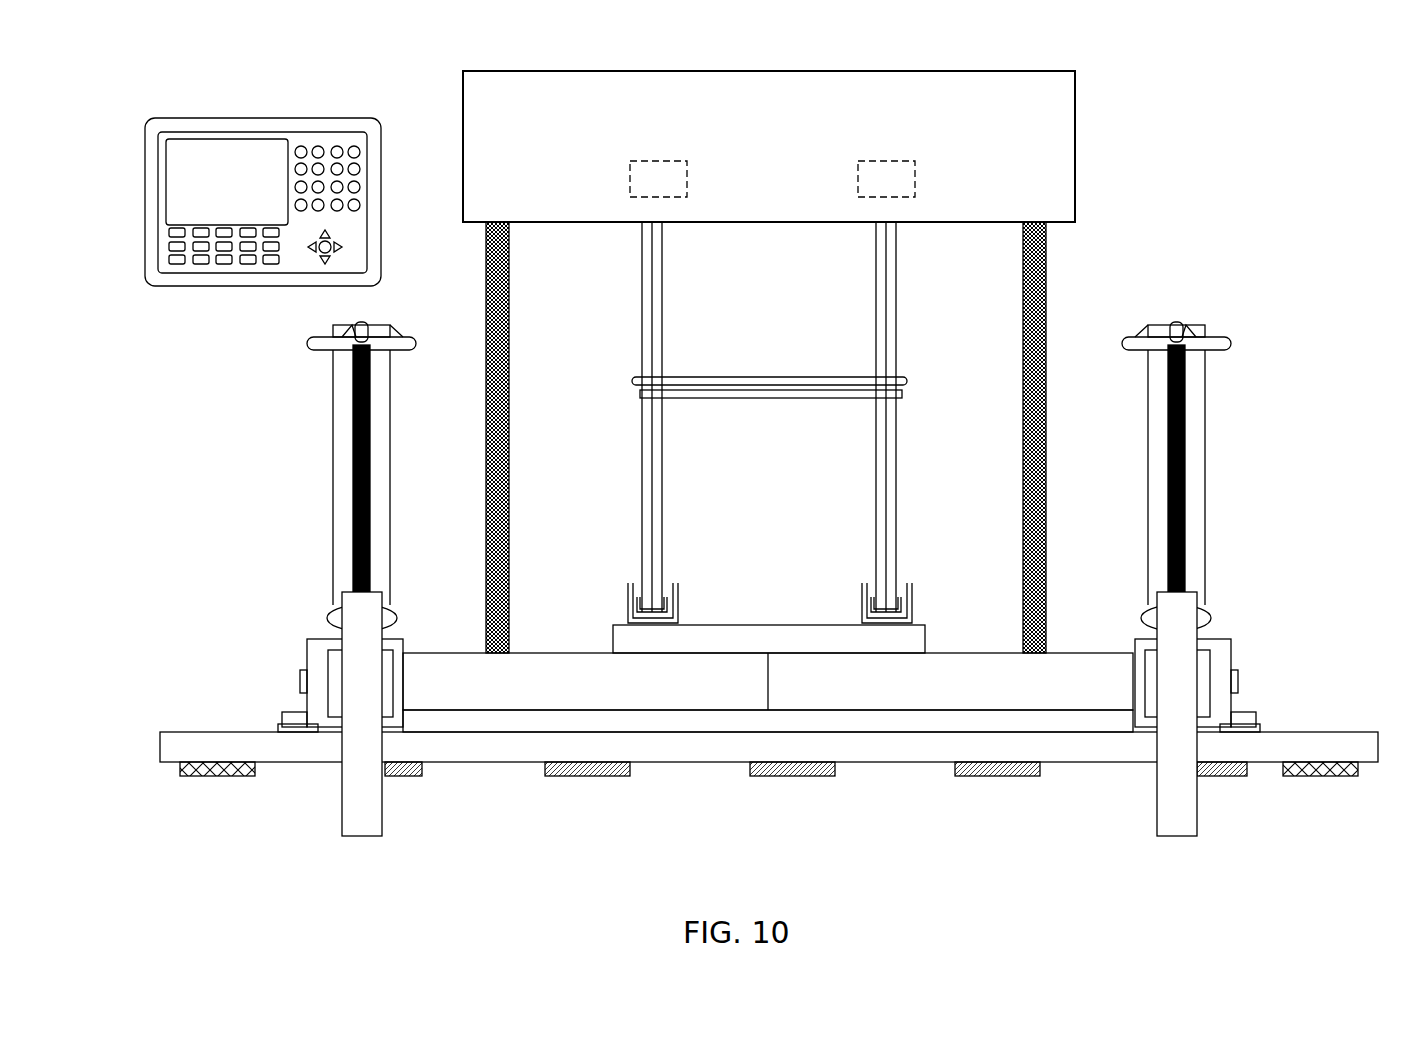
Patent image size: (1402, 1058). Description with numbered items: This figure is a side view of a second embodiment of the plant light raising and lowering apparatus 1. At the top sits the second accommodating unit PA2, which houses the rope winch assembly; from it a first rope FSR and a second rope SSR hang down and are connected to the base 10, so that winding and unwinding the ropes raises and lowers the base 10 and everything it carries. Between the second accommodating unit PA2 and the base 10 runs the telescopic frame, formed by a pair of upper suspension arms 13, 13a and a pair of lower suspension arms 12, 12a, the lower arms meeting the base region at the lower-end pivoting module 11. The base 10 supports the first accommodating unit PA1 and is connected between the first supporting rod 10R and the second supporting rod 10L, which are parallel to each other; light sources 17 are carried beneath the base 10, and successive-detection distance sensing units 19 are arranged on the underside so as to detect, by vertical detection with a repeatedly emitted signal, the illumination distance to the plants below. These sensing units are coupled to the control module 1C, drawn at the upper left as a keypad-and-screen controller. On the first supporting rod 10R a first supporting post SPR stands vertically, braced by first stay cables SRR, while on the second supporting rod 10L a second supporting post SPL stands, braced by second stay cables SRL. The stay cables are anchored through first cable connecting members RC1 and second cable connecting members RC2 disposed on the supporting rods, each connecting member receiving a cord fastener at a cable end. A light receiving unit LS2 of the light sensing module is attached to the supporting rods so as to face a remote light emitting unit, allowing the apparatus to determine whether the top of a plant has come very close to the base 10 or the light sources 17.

The plant light raising and lowering apparatus 1 is at (1280, 122).
The control module 1C is at (198, 297).
The second accommodating unit PA2 is at (1072, 90).
The first accommodating unit PA1 is at (674, 590).
The second rope SSR is at (486, 318).
The first rope FSR is at (1046, 280).
The upper suspension arm 13 is at (652, 333).
The upper suspension arm 13a is at (895, 333).
The lower suspension arm 12 is at (652, 470).
The lower suspension arm 12a is at (886, 470).
The lower-end pivoting module 11 is at (633, 590).
The base 10 is at (676, 690).
The second supporting rod 10L is at (406, 682).
The first supporting rod 10R is at (1130, 682).
The light source 17 is at (565, 778).
The successive-detection distance sensing unit 19 is at (190, 777).
The second supporting post SPL is at (333, 462).
The second stay cable SRL is at (358, 462).
The first supporting post SPR is at (1205, 450).
The first stay cable SRR is at (1177, 450).
The first cable connecting member RC1 is at (1184, 600).
The second cable connecting member RC2 is at (1225, 345).
The light receiving unit LS2 is at (350, 822).